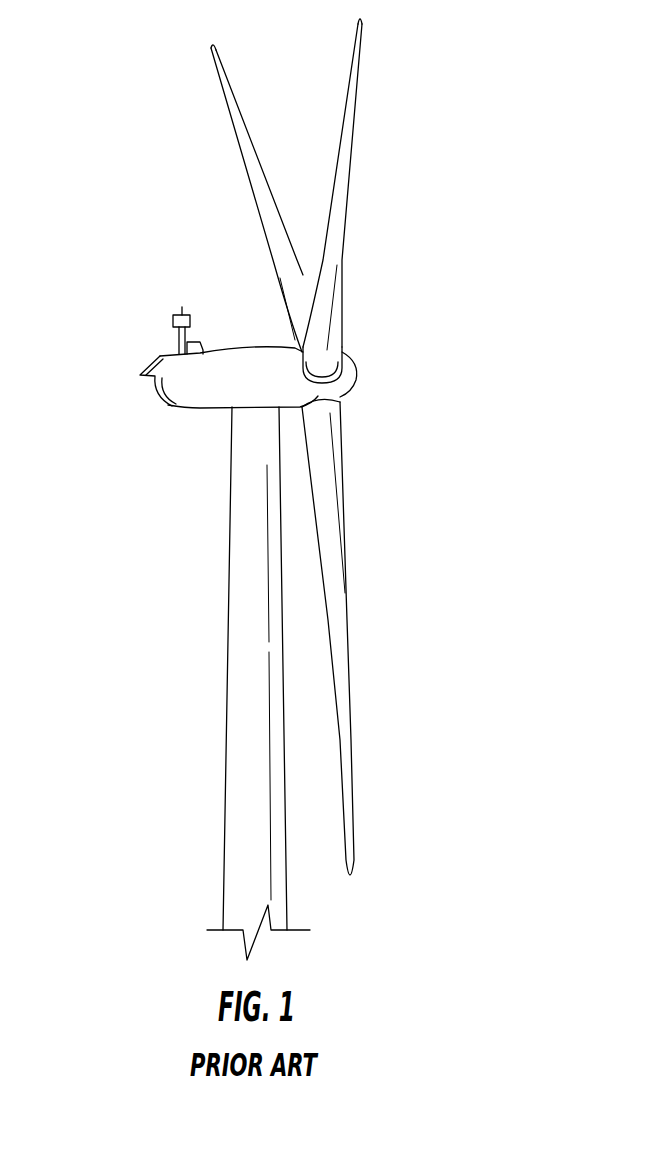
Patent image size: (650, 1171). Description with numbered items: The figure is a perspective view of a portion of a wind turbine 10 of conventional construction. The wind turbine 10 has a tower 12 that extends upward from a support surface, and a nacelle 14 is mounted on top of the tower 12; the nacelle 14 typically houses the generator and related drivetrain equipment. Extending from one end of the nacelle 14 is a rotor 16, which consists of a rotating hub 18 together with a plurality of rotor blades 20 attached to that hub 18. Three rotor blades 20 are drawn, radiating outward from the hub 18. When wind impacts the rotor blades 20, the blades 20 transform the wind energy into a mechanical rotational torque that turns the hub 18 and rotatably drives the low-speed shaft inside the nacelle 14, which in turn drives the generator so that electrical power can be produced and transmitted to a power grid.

The wind turbine 10 is at (115, 141).
The tower 12 is at (228, 727).
The nacelle 14 is at (193, 409).
The rotor 16 is at (447, 275).
The rotating hub 18 is at (355, 382).
The rotor blades 20 is at (263, 173).